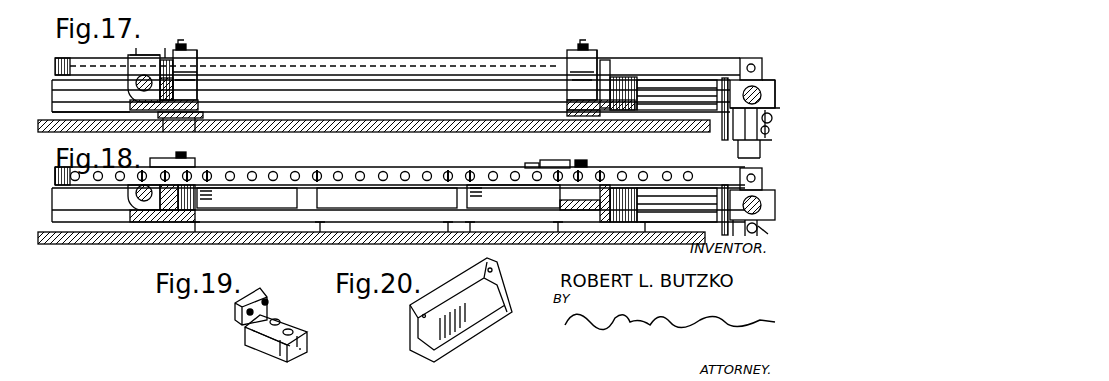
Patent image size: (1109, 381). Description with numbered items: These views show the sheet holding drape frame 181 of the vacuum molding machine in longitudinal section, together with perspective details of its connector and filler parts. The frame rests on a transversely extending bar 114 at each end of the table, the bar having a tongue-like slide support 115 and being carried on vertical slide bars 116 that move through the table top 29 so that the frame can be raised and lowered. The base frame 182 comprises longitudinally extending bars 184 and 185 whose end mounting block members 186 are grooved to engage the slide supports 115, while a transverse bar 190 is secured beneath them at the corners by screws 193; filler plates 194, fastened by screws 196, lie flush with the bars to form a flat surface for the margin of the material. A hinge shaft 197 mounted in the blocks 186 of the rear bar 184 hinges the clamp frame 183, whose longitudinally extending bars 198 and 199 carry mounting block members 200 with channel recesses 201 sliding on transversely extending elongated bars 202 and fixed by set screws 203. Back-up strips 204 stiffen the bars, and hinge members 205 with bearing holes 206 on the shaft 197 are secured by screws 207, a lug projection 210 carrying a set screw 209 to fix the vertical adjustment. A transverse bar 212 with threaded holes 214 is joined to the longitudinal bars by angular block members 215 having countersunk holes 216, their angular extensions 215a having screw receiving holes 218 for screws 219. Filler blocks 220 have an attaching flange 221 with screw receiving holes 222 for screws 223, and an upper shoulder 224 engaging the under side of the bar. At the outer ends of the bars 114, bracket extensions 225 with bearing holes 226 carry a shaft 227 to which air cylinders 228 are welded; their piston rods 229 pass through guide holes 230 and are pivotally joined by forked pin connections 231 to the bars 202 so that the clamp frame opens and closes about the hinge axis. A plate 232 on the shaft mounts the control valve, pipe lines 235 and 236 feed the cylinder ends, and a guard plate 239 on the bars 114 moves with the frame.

In FIG. 17, the table top 29 is at (368, 132).
In FIG. 18, the table top 29 is at (50, 244).
In FIG. 17, the transversely extending bar 114 is at (365, 88).
In FIG. 18, the transversely extending bar 114 is at (90, 222).
In FIG. 17, the slide support 115 is at (408, 100).
In FIG. 18, the slide support 115 is at (105, 205).
In FIG. 17, the vertical slide bar 116 is at (196, 118).
In FIG. 18, the vertical slide bar 116 is at (555, 160).
In FIG. 17, the drape frame 181 is at (496, 52).
In FIG. 18, the drape frame 181 is at (305, 162).
In FIG. 18, the base frame 182 is at (312, 244).
In FIG. 17, the clamp frame 183 is at (626, 56).
In FIG. 18, the clamp frame 183 is at (450, 168).
In FIG. 17, the longitudinally extending bar 184 is at (128, 112).
In FIG. 18, the longitudinally extending bar 184 is at (145, 222).
In FIG. 17, the longitudinally extending bar 185 is at (650, 100).
In FIG. 18, the longitudinally extending bar 185 is at (640, 222).
In FIG. 17, the mounting block member 186 is at (140, 100).
In FIG. 18, the mounting block member 186 is at (130, 200).
In FIG. 18, the transverse bar 190 is at (350, 222).
In FIG. 18, the screw 193 is at (196, 232).
In FIG. 18, the filler plate 194 is at (397, 215).
In FIG. 18, the screw 196 is at (448, 232).
In FIG. 17, the hinge shaft 197 is at (160, 118).
In FIG. 18, the hinge shaft 197 is at (165, 160).
In FIG. 17, the longitudinally extending bar 198 is at (200, 101).
In FIG. 18, the longitudinally extending bar 198 is at (220, 192).
In FIG. 17, the longitudinally extending bar 199 is at (566, 102).
In FIG. 18, the longitudinally extending bar 199 is at (560, 202).
In FIG. 17, the mounting block member 200 is at (200, 58).
In FIG. 17, the channel recess 201 is at (200, 52).
In FIG. 17, the transversely extending elongated bar 202 is at (316, 58).
In FIG. 18, the transversely extending elongated bar 202 is at (718, 167).
In FIG. 17, the set screw 203 is at (181, 40).
In FIG. 17, the back-up strip 204 is at (163, 118).
In FIG. 18, the back-up strip 204 is at (606, 185).
In FIG. 17, the hinge member 205 is at (136, 52).
In FIG. 18, the hinge member 205 is at (138, 232).
In FIG. 17, the bearing hole 206 is at (140, 55).
In FIG. 17, the screw 207 is at (198, 76).
In FIG. 17, the set screw 209 is at (168, 48).
In FIG. 17, the lug projection 210 is at (147, 76).
In FIG. 18, the transversely extending elongated bar 212 is at (396, 168).
In FIG. 18, the threaded hole 214 is at (360, 172).
In FIG. 18, the angular block member 215 is at (550, 166).
In FIG. 19, the angular block member 215 is at (255, 350).
In FIG. 19, the angular extension 215a is at (240, 322).
In FIG. 19, the countersunk hole 216 is at (290, 330).
In FIG. 19, the screw receiving hole 218 is at (238, 312).
In FIG. 18, the screw 219 is at (581, 160).
In FIG. 18, the filler block 220 is at (500, 190).
In FIG. 20, the filler block 220 is at (414, 343).
In FIG. 20, the attaching flange 221 is at (420, 315).
In FIG. 20, the screw receiving hole 222 is at (422, 317).
In FIG. 18, the screw 223 is at (470, 172).
In FIG. 20, the upper shoulder 224 is at (495, 290).
In FIG. 17, the bracket extension 225 is at (776, 92).
In FIG. 17, the bearing hole 226 is at (775, 95).
In FIG. 17, the shaft 227 is at (745, 88).
In FIG. 18, the shaft 227 is at (775, 208).
In FIG. 17, the air cylinder 228 is at (771, 140).
In FIG. 17, the piston rod 229 is at (765, 80).
In FIG. 17, the guide hole 230 is at (770, 82).
In FIG. 17, the forked pin connection 231 is at (762, 58).
In FIG. 18, the forked pin connection 231 is at (751, 179).
In FIG. 18, the plate 232 is at (770, 230).
In FIG. 17, the pipe line 235 is at (762, 152).
In FIG. 17, the pipe line 236 is at (772, 117).
In FIG. 17, the guard plate 239 is at (722, 132).
In FIG. 18, the guard plate 239 is at (725, 210).